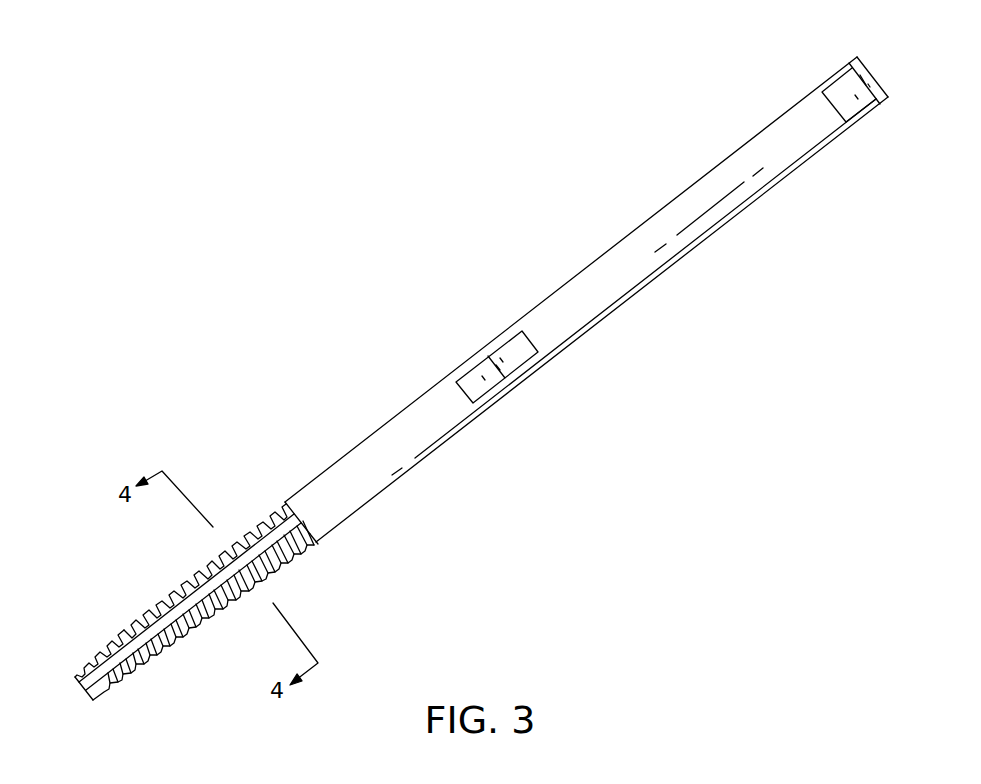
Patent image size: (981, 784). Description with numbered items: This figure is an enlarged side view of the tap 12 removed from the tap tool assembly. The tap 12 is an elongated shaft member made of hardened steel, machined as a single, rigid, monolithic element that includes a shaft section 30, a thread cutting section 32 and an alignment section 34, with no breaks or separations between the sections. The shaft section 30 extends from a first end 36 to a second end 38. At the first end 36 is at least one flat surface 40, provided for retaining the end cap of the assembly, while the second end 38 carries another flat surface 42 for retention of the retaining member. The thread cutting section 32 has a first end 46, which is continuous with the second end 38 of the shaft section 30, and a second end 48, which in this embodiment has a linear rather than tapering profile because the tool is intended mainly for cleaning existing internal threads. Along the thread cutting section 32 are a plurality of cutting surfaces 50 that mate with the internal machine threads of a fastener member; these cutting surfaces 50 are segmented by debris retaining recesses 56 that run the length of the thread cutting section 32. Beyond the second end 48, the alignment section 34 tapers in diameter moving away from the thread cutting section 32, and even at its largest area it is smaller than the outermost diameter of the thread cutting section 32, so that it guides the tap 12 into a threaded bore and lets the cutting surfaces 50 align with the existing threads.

The tap 12 is at (356, 293).
The shaft section 30 is at (582, 295).
The thread cutting section 32 is at (247, 524).
The alignment section 34 is at (99, 700).
The first end 36 is at (850, 63).
The second end 38 is at (318, 542).
The flat surface 40 is at (843, 90).
The flat surface 42 is at (517, 355).
The first end 46 is at (313, 543).
The second end 48 is at (105, 643).
The cutting surfaces 50 is at (201, 566).
The debris retaining recesses 56 is at (150, 625).